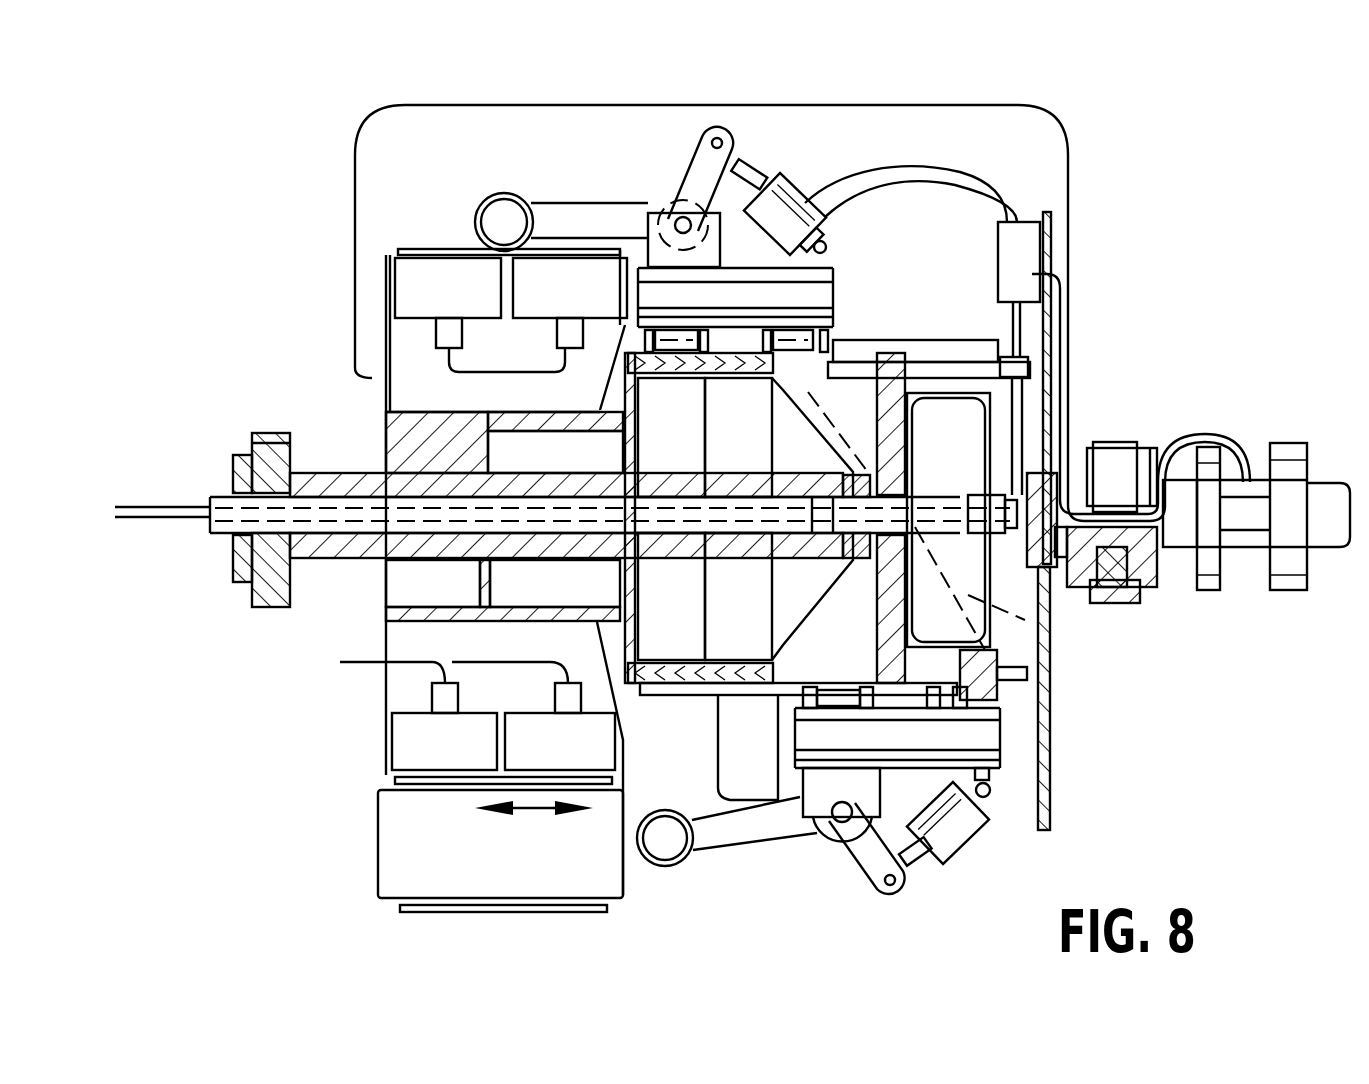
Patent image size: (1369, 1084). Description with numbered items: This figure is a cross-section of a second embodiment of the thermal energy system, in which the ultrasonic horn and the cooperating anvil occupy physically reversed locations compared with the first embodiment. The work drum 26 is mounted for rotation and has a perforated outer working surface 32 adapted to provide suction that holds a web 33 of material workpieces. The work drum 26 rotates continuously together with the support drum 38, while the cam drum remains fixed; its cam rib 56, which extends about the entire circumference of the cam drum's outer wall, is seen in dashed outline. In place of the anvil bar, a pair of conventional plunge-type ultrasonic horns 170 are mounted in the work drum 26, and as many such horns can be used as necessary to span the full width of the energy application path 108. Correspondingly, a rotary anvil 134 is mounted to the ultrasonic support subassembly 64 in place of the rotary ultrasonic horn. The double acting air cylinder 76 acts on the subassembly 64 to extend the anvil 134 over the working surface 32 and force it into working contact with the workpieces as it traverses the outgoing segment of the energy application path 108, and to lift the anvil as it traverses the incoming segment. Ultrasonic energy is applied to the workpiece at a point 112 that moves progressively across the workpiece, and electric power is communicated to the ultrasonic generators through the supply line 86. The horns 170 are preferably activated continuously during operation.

The work drum 26 is at (372, 390).
The outer working surface 32 is at (392, 255).
The web 33 is at (448, 249).
The support drum 38 is at (878, 328).
The cam rib 56 is at (1053, 625).
The ultrasonic support subassembly 64 is at (602, 185).
The double acting air cylinder 76 is at (827, 190).
The supply line 86 is at (968, 105).
The energy application path 108 is at (537, 812).
The point 112 is at (500, 250).
The rotary anvil 134 is at (514, 194).
The plunge-type ultrasonic horns 170 is at (503, 292).